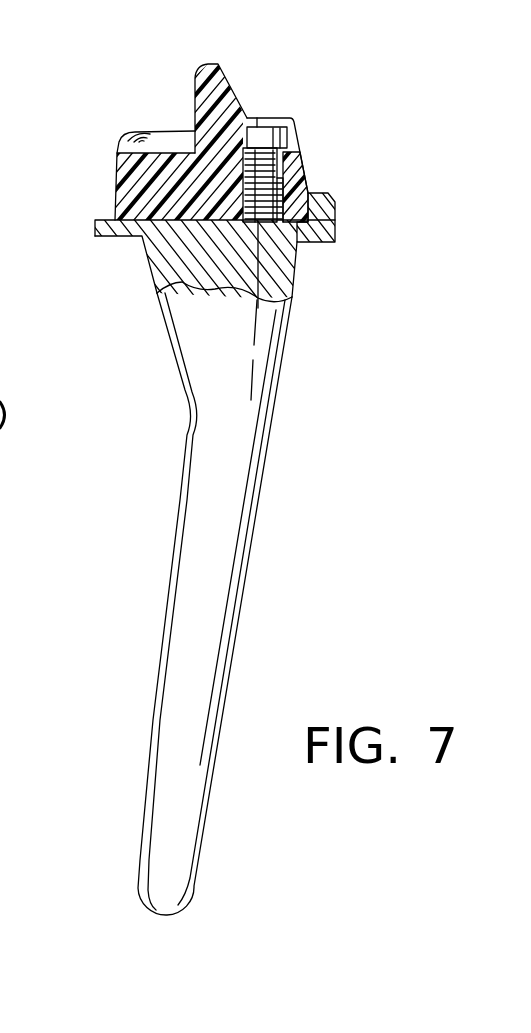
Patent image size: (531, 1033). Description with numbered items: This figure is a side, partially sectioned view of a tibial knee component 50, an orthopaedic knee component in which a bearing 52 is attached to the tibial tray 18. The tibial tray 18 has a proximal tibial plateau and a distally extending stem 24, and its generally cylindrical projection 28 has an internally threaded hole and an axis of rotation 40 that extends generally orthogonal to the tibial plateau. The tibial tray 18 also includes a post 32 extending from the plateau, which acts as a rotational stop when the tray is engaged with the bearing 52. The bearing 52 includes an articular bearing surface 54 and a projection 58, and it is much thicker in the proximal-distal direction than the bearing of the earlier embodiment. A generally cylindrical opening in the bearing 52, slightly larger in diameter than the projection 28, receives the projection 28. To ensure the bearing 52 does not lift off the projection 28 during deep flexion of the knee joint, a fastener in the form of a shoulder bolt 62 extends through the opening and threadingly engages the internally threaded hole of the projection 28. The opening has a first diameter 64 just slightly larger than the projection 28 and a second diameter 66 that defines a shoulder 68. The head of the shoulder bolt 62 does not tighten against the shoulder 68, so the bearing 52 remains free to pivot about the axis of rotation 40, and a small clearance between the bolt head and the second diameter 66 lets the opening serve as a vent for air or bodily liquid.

The tibial tray 18 is at (86, 228).
The stem 24 is at (207, 657).
The projection 28 is at (337, 222).
The post 32 is at (338, 200).
The axis of rotation 40 is at (258, 262).
The tibial knee component 50 is at (88, 105).
The bearing 52 is at (108, 178).
The articular bearing surface 54 is at (170, 147).
The projection 58 is at (212, 67).
The shoulder bolt 62 is at (259, 116).
The first diameter 64 is at (305, 186).
The second diameter 66 is at (280, 139).
The shoulder 68 is at (285, 167).